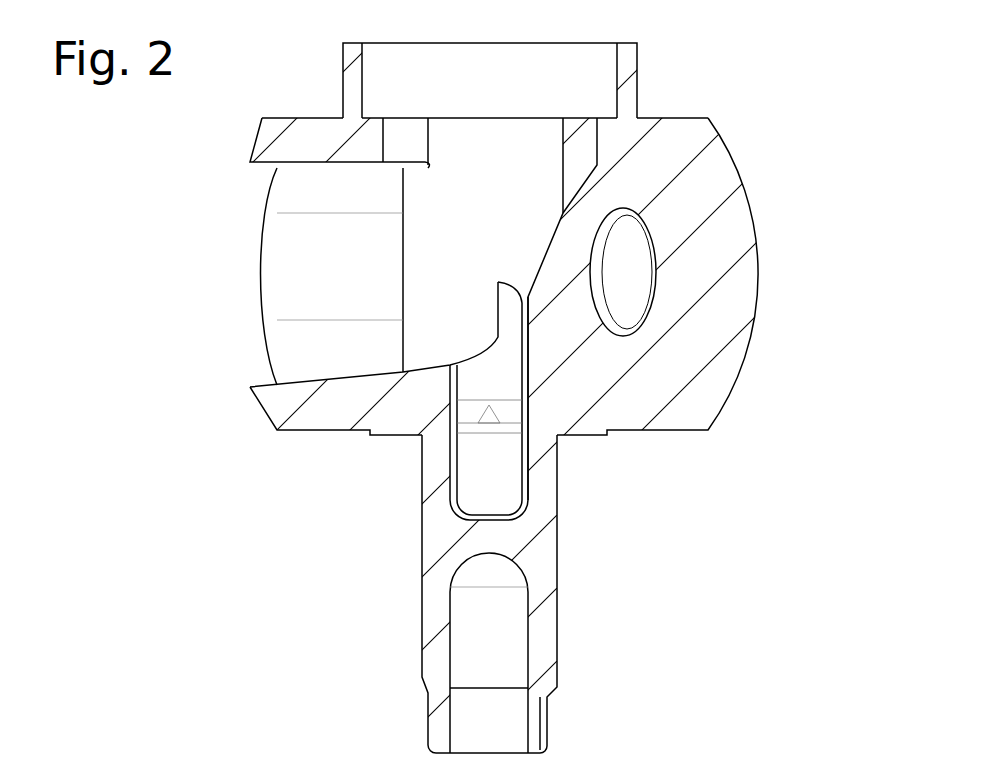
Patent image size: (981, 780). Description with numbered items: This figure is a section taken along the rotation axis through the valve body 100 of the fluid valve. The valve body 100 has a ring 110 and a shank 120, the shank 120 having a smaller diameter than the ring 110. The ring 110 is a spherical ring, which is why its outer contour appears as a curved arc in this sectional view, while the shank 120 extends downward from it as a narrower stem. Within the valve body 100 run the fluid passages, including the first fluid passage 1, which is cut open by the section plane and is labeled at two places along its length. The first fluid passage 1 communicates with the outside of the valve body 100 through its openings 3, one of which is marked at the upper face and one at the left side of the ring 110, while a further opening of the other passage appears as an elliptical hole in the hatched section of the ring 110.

The valve body 100 is at (80, 232).
The openings of the first fluid passage 3 is at (268, 283).
The ring 110 is at (752, 202).
The shank 120 is at (562, 582).
The first fluid passage 1 is at (481, 272).